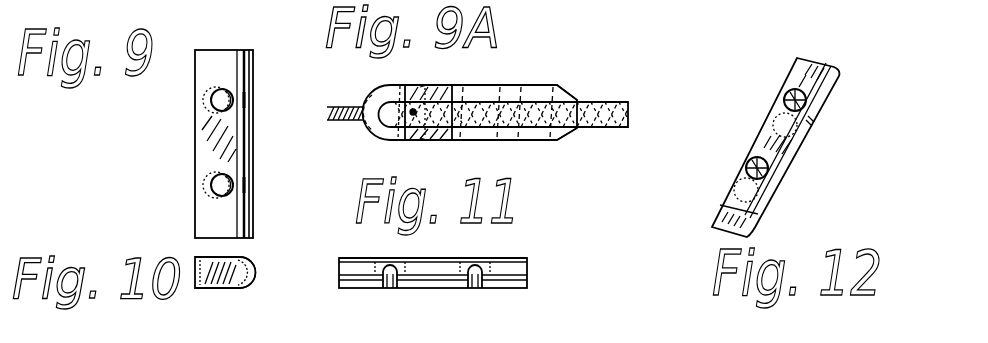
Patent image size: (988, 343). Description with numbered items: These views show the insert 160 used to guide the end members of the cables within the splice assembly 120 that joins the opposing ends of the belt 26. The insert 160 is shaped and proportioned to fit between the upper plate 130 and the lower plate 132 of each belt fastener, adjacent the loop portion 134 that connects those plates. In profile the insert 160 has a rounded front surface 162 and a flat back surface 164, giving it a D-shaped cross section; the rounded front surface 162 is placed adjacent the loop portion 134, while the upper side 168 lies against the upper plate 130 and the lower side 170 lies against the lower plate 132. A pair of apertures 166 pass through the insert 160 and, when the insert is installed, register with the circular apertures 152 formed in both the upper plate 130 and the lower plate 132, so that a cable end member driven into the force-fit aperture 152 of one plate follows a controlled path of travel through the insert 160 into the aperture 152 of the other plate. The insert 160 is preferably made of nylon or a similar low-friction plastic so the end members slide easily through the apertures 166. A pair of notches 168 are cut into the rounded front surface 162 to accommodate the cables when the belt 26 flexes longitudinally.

In FIG. 9A, the belt 26 is at (612, 101).
In FIG. 9A, the splice assembly 120 is at (513, 65).
In FIG. 9A, the upper plate 130 is at (548, 90).
In FIG. 9A, the lower plate 132 is at (553, 141).
In FIG. 9A, the loop portion 134 is at (366, 129).
In FIG. 9A, the circular aperture 152 is at (385, 86).
In FIG. 9, the insert 160 is at (165, 133).
In FIG. 10, the insert 160 is at (262, 262).
In FIG. 9A, the insert 160 is at (372, 95).
In FIG. 11, the insert 160 is at (520, 245).
In FIG. 12, the insert 160 is at (825, 52).
In FIG. 9, the rounded front surface 162 is at (256, 158).
In FIG. 10, the rounded front surface 162 is at (258, 282).
In FIG. 11, the rounded front surface 162 is at (440, 258).
In FIG. 12, the rounded front surface 162 is at (788, 92).
In FIG. 9, the flat back surface 164 is at (196, 143).
In FIG. 10, the flat back surface 164 is at (195, 268).
In FIG. 12, the flat back surface 164 is at (763, 127).
In FIG. 9, the apertures 166 is at (205, 96).
In FIG. 9A, the apertures 166 is at (405, 142).
In FIG. 12, the apertures 166 is at (776, 134).
In FIG. 9, the notches 168 is at (253, 100).
In FIG. 9A, the notches 168 is at (426, 86).
In FIG. 11, the notches 168 is at (476, 290).
In FIG. 12, the notches 168 is at (812, 120).
In FIG. 9A, the lower side 170 is at (424, 137).
In FIG. 12, the lower side 170 is at (722, 233).